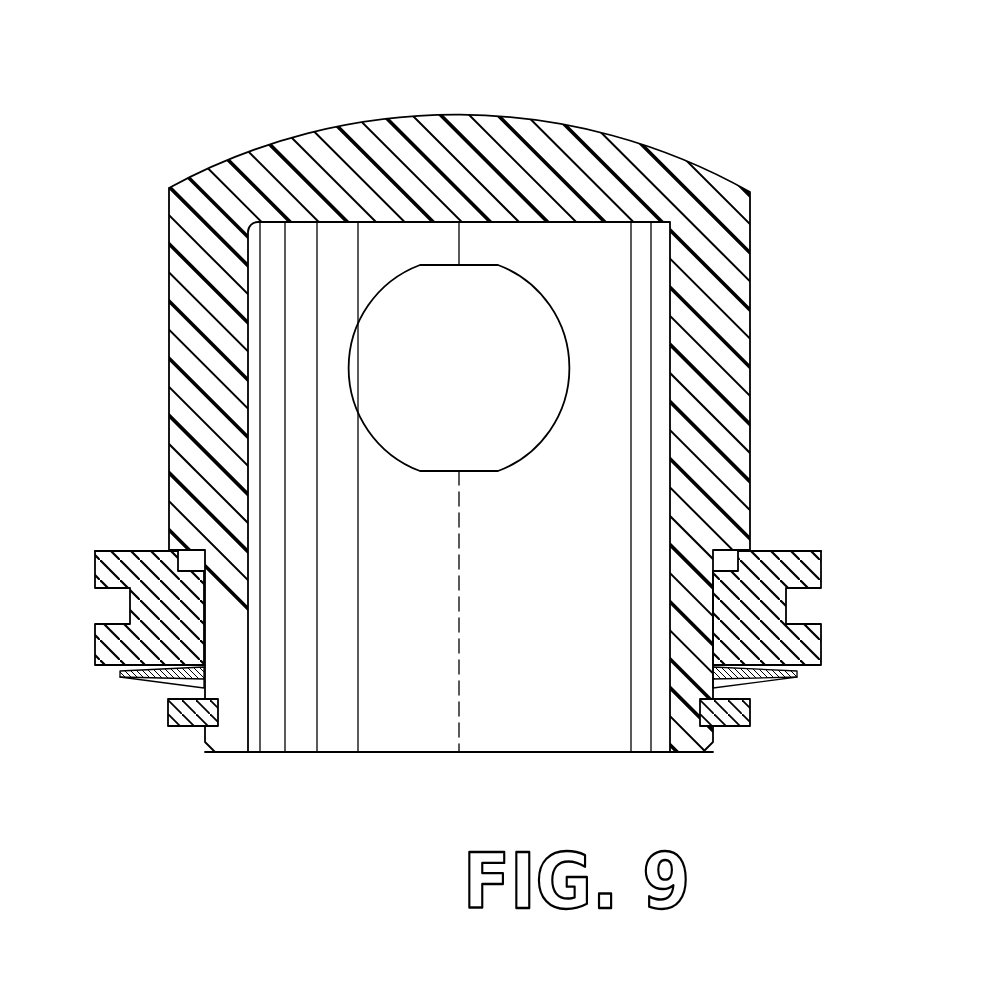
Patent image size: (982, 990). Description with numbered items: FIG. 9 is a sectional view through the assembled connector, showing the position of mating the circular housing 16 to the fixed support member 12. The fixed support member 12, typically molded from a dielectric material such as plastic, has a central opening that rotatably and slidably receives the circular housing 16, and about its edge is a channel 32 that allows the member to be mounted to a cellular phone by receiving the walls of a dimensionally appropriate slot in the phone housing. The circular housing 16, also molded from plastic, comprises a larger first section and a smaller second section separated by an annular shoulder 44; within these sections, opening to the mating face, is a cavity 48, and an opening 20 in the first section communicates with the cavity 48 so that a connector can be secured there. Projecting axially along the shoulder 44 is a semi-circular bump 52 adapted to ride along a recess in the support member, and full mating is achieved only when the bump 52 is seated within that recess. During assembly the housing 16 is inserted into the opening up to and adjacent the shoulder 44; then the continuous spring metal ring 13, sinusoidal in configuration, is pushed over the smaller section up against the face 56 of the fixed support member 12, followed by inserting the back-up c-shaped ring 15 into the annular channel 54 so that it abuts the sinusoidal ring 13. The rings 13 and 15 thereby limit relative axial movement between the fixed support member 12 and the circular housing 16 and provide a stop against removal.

The fixed support member 12 is at (768, 536).
The continuous spring metal ring 13 is at (760, 683).
The back-up c-shaped ring 15 is at (735, 727).
The circular housing 16 is at (674, 137).
The opening 20 is at (560, 413).
The channel 32 is at (110, 614).
The annular shoulder 44 is at (163, 575).
The cavity 48 is at (670, 660).
The semi-circular bump 52 is at (745, 570).
The annular channel 54 is at (165, 715).
The face 56 is at (108, 668).